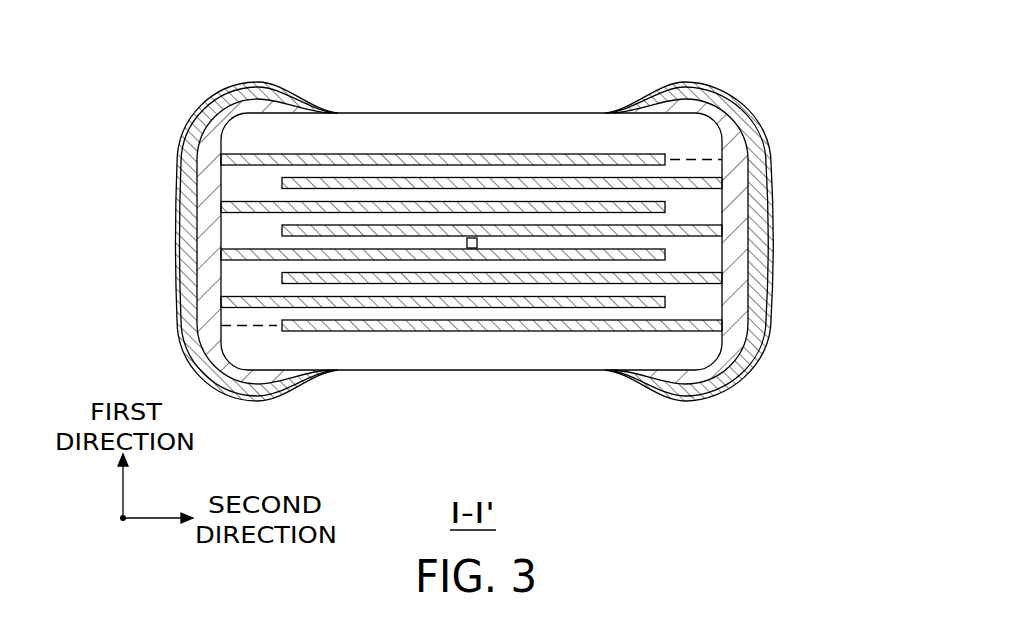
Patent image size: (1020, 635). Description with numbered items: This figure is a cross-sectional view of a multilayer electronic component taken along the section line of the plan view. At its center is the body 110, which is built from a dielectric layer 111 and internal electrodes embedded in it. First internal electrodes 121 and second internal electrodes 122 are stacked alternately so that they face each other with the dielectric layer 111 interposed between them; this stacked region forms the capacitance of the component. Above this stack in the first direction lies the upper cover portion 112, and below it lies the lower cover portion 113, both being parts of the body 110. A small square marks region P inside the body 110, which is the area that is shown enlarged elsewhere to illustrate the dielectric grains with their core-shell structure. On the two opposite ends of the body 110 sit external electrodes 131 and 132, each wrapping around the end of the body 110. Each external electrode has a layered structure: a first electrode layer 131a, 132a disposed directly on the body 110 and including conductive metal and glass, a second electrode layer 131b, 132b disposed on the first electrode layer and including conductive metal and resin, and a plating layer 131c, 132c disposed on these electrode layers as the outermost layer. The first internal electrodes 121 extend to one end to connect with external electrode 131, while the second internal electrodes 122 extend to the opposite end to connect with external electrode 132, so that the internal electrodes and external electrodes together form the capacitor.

The body 110 is at (392, 112).
The dielectric layer 111 is at (330, 190).
The upper cover portion 112 is at (488, 133).
The lower cover portion 113 is at (485, 352).
The first internal electrode 121 is at (537, 158).
The second internal electrode 122 is at (590, 183).
The external electrode 131 is at (185, 241).
The first electrode layer 131a is at (203, 207).
The second electrode layer 131b is at (188, 240).
The plating layer 131c is at (82, 197).
The external electrode 132 is at (759, 241).
The first electrode layer 132a is at (738, 209).
The second electrode layer 132b is at (758, 241).
The plating layer 132c is at (772, 273).
The region P is at (477, 243).